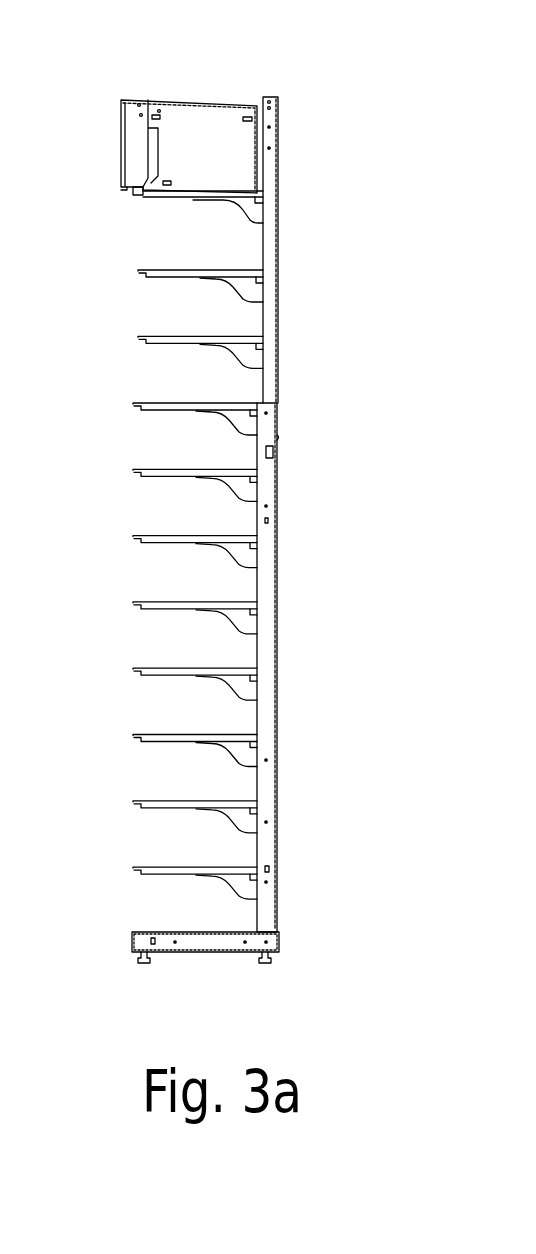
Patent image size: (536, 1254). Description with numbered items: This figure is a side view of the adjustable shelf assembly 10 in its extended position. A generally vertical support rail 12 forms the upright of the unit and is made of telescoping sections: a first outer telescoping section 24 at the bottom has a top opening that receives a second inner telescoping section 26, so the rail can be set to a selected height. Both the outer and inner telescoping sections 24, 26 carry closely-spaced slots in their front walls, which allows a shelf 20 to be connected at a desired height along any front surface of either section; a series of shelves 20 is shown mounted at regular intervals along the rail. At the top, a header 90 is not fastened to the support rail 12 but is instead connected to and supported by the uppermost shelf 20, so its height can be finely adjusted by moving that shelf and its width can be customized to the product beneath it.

The adjustable shelf assembly 10 is at (276, 97).
The support rail 12 is at (293, 369).
The shelf 20 is at (193, 200).
The first outer telescoping section 24 is at (263, 598).
The second inner telescoping section 26 is at (270, 263).
The header 90 is at (196, 118).